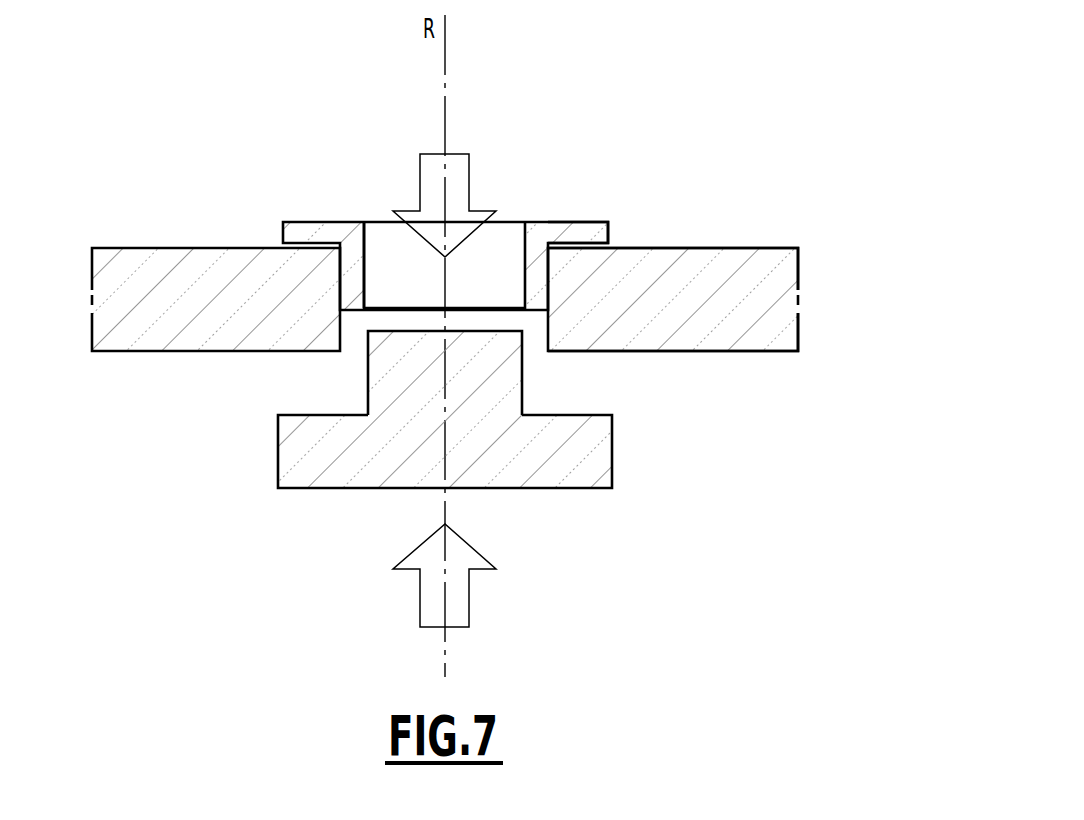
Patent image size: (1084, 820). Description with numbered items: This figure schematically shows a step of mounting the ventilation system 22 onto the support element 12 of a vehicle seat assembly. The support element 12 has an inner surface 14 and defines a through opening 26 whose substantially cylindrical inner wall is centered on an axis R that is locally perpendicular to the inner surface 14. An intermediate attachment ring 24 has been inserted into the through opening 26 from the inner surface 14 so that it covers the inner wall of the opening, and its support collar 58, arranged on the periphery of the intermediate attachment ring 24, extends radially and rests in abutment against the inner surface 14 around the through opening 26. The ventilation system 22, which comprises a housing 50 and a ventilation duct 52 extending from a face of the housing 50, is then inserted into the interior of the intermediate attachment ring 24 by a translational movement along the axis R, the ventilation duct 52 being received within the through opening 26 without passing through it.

The support element 12 is at (846, 304).
The inner surface 14 is at (750, 220).
The ventilation system 22 is at (503, 353).
The intermediate attachment ring 24 is at (445, 188).
The through opening 26 is at (383, 242).
The housing 50 is at (318, 463).
The ventilation duct 52 is at (493, 360).
The support collar 58 is at (583, 232).